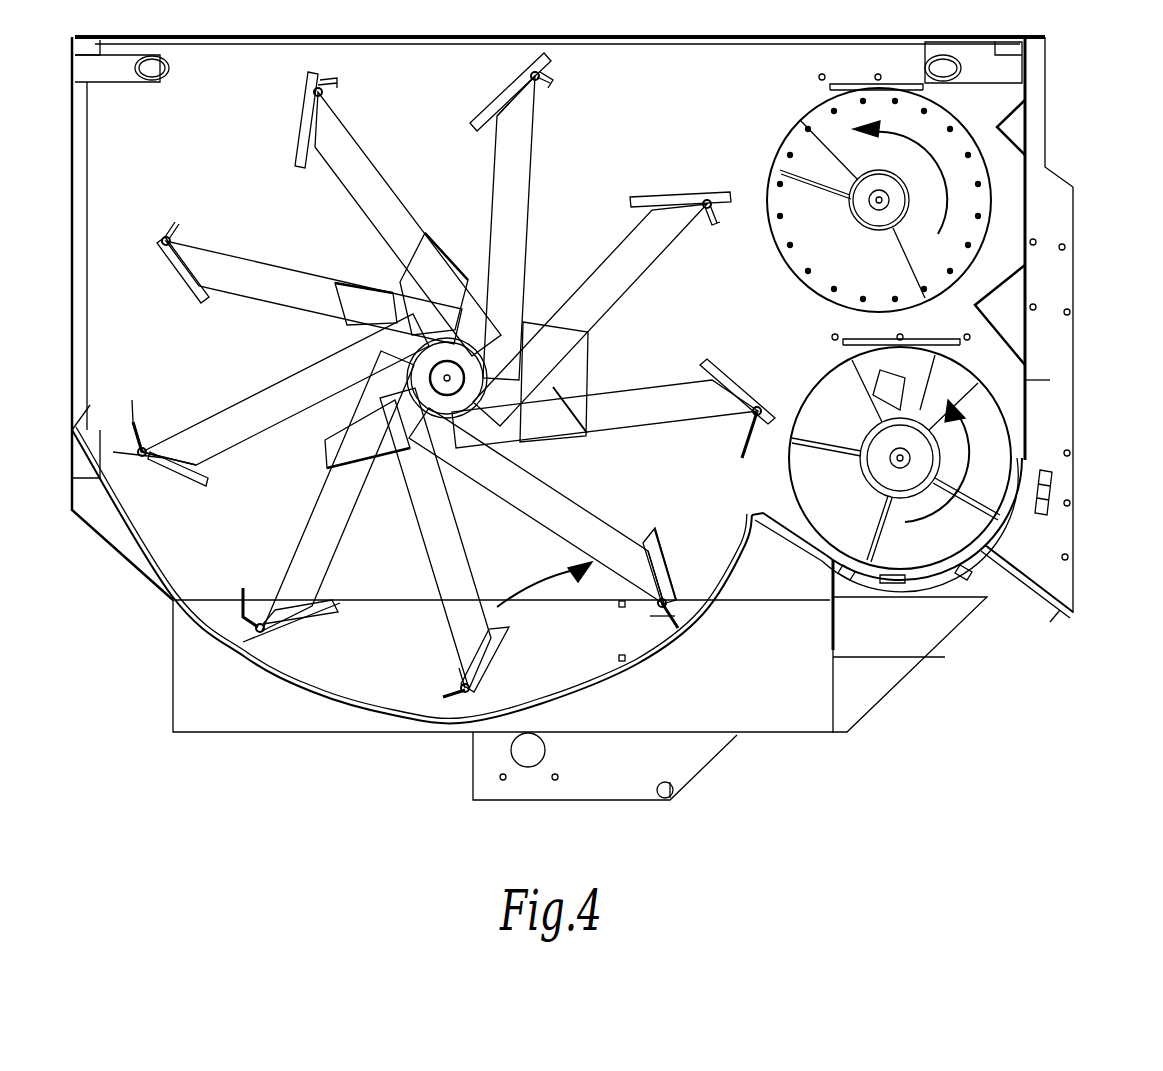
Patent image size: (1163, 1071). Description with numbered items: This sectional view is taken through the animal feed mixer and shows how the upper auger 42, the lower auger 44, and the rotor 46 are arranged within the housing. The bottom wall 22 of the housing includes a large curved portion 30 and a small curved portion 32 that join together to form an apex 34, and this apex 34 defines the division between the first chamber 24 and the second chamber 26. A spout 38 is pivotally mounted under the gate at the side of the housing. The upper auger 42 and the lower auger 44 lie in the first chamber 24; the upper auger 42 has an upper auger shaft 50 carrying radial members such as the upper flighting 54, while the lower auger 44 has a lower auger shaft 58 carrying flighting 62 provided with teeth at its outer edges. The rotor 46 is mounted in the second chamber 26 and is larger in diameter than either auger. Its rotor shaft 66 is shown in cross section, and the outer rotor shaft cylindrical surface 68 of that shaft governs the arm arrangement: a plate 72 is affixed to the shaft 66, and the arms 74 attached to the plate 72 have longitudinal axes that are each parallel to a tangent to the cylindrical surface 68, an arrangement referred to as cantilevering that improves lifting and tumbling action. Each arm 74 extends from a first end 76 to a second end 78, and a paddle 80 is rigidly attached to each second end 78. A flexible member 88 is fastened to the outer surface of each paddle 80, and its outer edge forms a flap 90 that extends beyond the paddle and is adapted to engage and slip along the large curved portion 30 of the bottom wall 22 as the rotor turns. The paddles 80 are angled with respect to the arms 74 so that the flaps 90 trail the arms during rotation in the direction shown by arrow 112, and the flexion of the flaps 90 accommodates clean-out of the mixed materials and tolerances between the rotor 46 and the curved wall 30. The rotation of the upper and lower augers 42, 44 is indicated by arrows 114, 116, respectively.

The bottom wall 22 is at (680, 645).
The first chamber 24 is at (772, 100).
The second chamber 26 is at (471, 373).
The large curved portion 30 is at (320, 690).
The small curved portion 32 is at (975, 575).
The apex 34 is at (760, 515).
The spout 38 is at (1073, 280).
The upper auger 42 is at (790, 130).
The lower auger 44 is at (820, 365).
The rotor 46 is at (265, 322).
The upper auger shaft 50 is at (872, 205).
The upper flighting 54 is at (785, 165).
The lower auger shaft 58 is at (898, 460).
The flighting 62 is at (800, 480).
The rotor shaft 66 is at (465, 345).
The rotor shaft cylindrical surface 68 is at (410, 280).
The plate 72 is at (385, 412).
The arm 74 is at (525, 235).
The first end 76 is at (395, 335).
The second end 78 is at (520, 102).
The paddle 80 is at (335, 80).
The flexible member 88 is at (303, 110).
The flap 90 is at (312, 90).
The arrow 112 is at (520, 610).
The arrow 114 is at (997, 127).
The arrow 116 is at (975, 445).